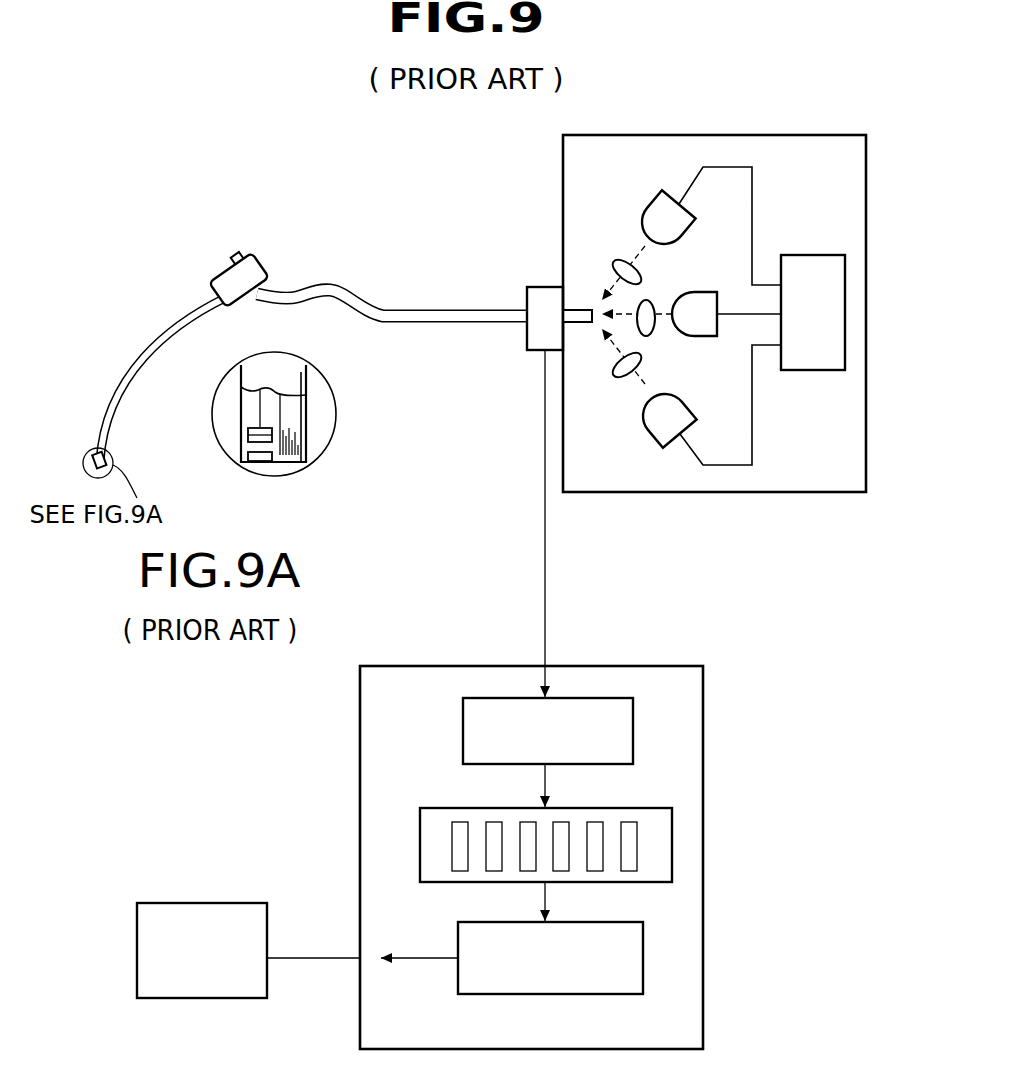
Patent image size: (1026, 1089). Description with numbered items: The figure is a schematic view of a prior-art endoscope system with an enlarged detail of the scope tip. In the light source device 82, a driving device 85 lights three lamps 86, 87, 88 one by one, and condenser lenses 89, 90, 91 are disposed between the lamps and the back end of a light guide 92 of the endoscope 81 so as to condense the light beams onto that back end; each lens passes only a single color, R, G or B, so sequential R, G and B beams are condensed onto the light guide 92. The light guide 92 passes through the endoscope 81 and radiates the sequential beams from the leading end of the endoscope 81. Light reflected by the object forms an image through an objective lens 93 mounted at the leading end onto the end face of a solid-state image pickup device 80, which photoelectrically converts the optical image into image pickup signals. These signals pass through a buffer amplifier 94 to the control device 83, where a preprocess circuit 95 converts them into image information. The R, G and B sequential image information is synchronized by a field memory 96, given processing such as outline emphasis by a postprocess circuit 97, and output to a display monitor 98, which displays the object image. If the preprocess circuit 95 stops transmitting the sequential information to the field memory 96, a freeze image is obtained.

In FIG. 9A, the solid-state image pickup device 80 is at (252, 443).
In FIG. 9, the endoscope 81 is at (213, 263).
In FIG. 9, the light source device 82 is at (772, 135).
In FIG. 9, the control device 83 is at (638, 666).
In FIG. 9, the driving device 85 is at (817, 255).
In FIG. 9, the lamp 86 is at (647, 193).
In FIG. 9, the lamp 87 is at (708, 292).
In FIG. 9, the lamp 88 is at (686, 398).
In FIG. 9, the condenser lens 89 is at (618, 260).
In FIG. 9, the condenser lens 90 is at (655, 327).
In FIG. 9, the condenser lens 91 is at (623, 378).
In FIG. 9A, the light guide 92 is at (293, 423).
In FIG. 9A, the objective lens 93 is at (260, 462).
In FIG. 9A, the buffer amplifier 94 is at (248, 430).
In FIG. 9, the preprocess circuit 95 is at (633, 731).
In FIG. 9, the field memory 96 is at (673, 837).
In FIG. 9, the postprocess circuit 97 is at (643, 952).
In FIG. 9, the display monitor 98 is at (230, 903).